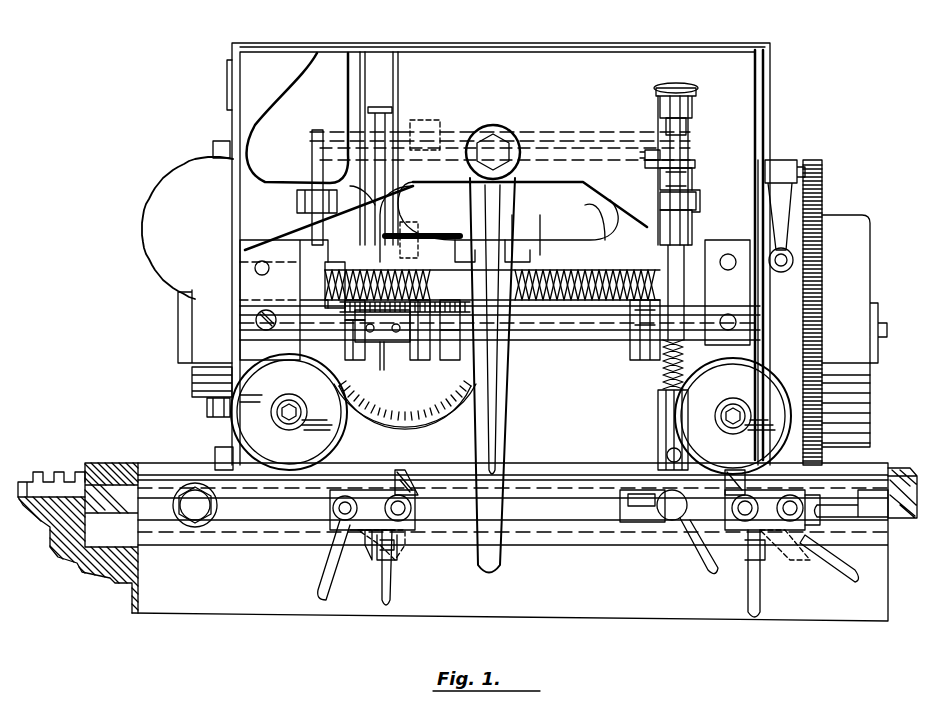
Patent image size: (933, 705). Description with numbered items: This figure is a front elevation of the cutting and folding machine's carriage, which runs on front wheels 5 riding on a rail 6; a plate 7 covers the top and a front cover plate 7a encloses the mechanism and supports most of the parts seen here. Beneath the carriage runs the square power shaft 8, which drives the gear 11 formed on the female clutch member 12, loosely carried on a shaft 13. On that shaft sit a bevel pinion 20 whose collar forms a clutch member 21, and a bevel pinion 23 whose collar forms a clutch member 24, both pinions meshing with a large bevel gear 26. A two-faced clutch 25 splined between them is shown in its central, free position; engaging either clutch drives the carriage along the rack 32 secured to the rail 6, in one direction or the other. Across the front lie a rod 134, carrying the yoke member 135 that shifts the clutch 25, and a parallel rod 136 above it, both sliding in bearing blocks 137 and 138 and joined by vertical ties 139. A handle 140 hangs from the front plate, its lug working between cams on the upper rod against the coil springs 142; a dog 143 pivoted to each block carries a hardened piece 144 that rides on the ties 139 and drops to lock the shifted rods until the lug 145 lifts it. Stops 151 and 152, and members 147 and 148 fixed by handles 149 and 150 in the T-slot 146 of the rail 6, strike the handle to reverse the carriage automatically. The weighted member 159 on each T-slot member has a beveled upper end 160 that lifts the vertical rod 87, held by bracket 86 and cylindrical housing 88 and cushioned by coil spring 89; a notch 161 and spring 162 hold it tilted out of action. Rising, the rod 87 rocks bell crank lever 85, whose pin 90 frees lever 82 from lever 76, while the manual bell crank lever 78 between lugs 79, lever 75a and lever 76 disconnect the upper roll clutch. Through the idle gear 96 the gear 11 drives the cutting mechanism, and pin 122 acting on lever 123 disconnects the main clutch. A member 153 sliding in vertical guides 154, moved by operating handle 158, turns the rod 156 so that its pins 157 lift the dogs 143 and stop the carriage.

The wheels 5 is at (302, 418).
The rail 6 is at (292, 605).
The plate 7 is at (452, 47).
The front cover plate 7a is at (575, 66).
The power shaft 8 is at (123, 465).
The gear 11 is at (822, 288).
The female member of clutch 12 is at (860, 293).
The shaft 13 is at (528, 343).
The bevel pinion 20 is at (453, 357).
The clutch member 21 is at (408, 382).
The bevel pinion 23 is at (302, 360).
The clutch member 24 is at (312, 365).
The two-faced clutch 25 is at (360, 372).
The bevel gear 26 is at (420, 400).
The rack 32 is at (52, 472).
The lever 75a is at (318, 160).
The lever 76 is at (345, 135).
The bell crank lever 78 is at (692, 125).
The lugs 79 is at (700, 104).
The lever 82 is at (648, 158).
The bell crank lever 85 is at (690, 180).
The bracket 86 is at (703, 202).
The vertical rod 87 is at (690, 255).
The cylindrical housing 88 is at (665, 405).
The coil spring 89 is at (668, 355).
The pin 90 is at (658, 168).
The idle gear 96 is at (824, 190).
The pin 122 is at (762, 170).
The lever 123 is at (783, 163).
The rod 134 is at (565, 342).
The yoke member 135 is at (381, 372).
The rod 136 is at (562, 282).
The bearing block 137 is at (247, 345).
The bearing block 138 is at (728, 345).
The vertical ties 139 is at (305, 300).
The handle 140 is at (503, 413).
The coil springs 142 is at (430, 265).
The dog 143 is at (428, 150).
The hardened piece 144 is at (300, 257).
The lug 145 is at (512, 228).
The T-slot 146 is at (260, 508).
The member 147 is at (370, 545).
The member 148 is at (778, 525).
The handle 149 is at (330, 505).
The handle 150 is at (812, 494).
The stop 151 is at (600, 245).
The stop 152 is at (192, 522).
The member 153 is at (210, 295).
The vertical guides 154 is at (362, 160).
The rod 156 is at (395, 265).
The pins 157 is at (432, 170).
The operating handle 158 is at (376, 110).
The irregular shaped member 159 is at (405, 522).
The beveled upper end 160 is at (408, 478).
The notch 161 is at (397, 578).
The spring 162 is at (330, 525).